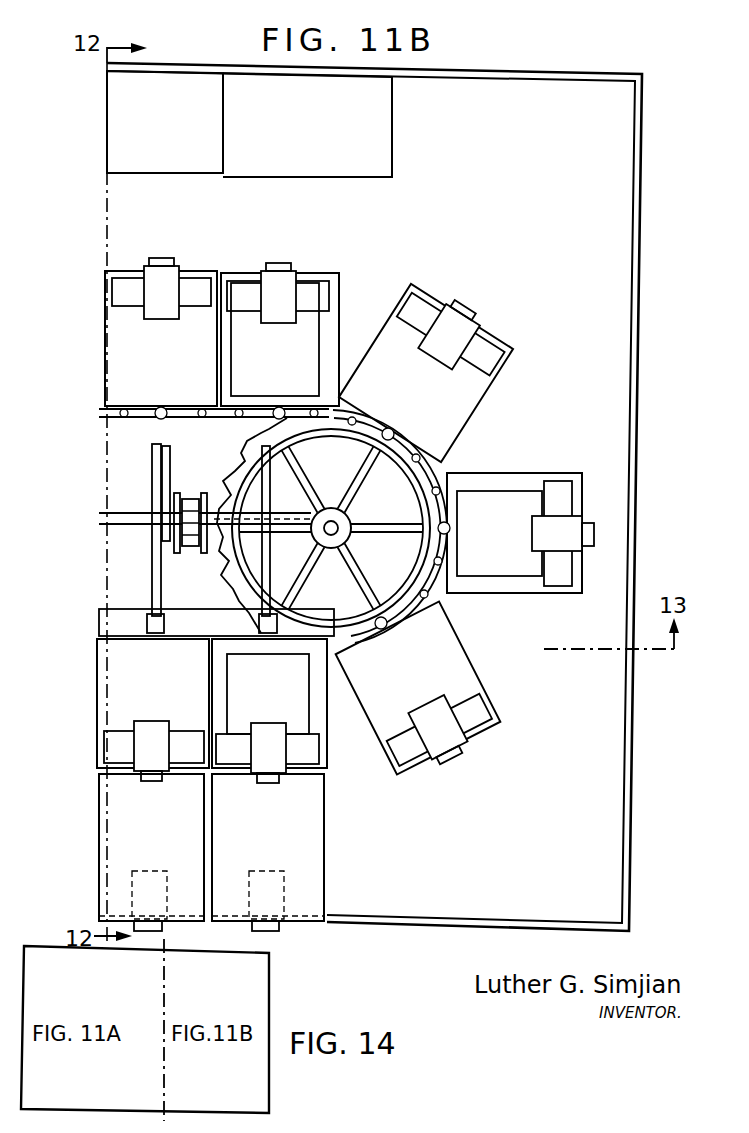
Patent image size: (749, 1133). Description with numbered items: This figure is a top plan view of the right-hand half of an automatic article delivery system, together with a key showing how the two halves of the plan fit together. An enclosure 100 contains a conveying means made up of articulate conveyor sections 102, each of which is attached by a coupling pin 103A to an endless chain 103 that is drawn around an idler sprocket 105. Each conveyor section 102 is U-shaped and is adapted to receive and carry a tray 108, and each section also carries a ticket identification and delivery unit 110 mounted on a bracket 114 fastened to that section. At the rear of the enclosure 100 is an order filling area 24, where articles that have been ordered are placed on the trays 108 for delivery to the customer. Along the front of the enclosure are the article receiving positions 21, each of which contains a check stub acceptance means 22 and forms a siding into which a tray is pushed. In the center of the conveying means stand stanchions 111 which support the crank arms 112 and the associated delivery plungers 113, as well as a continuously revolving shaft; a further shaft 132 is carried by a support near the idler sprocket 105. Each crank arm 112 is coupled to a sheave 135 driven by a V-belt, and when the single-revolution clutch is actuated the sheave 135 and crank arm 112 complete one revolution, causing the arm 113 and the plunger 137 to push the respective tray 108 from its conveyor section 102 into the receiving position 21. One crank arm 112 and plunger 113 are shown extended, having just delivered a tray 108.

The enclosure 100 is at (631, 722).
The order filling area 24 is at (176, 138).
The articulate conveyor section 102 is at (462, 418).
The tray 108 is at (318, 352).
The ticket identification and delivery unit 110 is at (275, 268).
The bracket 114 is at (303, 283).
The article receiving position 21 is at (157, 844).
The check stub acceptance means 22 is at (280, 930).
The endless chain 103 is at (118, 418).
The coupling pin 103A is at (163, 418).
The plunger 137 is at (152, 620).
The delivery plunger 113 is at (155, 478).
The crank arm 112 is at (172, 468).
The shaft 132 is at (332, 535).
The stanchion 111 is at (190, 505).
The sheave 135 is at (205, 550).
The idler sprocket 105 is at (237, 578).